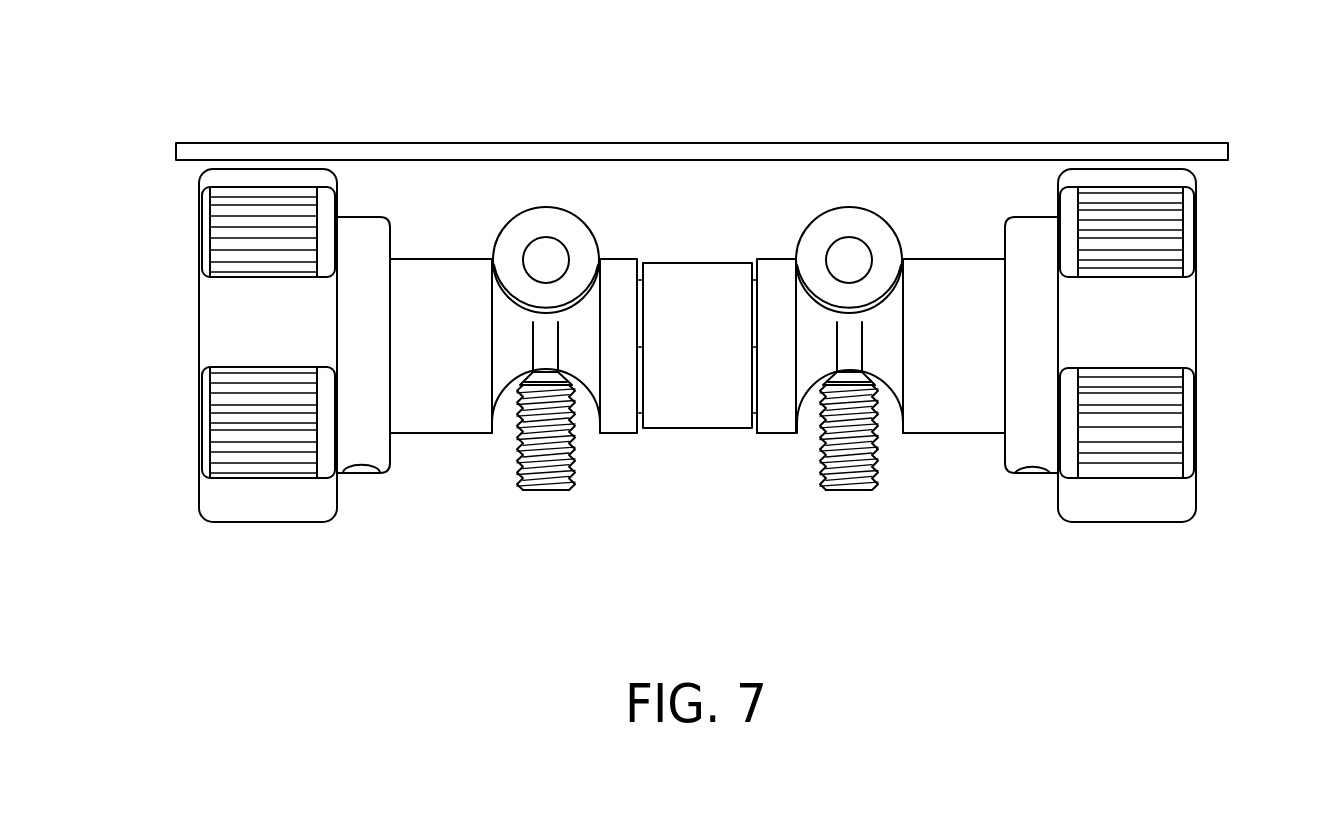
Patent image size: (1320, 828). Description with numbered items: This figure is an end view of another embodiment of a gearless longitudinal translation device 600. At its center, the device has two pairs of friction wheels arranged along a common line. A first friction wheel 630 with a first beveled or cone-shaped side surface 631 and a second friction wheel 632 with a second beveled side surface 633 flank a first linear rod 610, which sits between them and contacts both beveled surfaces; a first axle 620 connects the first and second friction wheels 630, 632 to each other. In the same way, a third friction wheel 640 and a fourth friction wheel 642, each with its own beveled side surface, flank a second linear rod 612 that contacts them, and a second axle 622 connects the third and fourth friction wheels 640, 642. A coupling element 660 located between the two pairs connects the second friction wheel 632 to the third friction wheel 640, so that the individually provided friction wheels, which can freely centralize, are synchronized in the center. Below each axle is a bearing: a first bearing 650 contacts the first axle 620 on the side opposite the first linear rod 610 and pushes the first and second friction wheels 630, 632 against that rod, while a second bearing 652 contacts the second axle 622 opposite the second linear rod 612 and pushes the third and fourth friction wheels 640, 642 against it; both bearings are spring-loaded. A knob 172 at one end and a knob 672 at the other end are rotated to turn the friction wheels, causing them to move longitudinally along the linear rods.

The gearless longitudinal translation device 600 is at (1205, 86).
The knob 172 is at (199, 335).
The knob 672 is at (1196, 331).
The first linear rod 610 is at (520, 212).
The second linear rod 612 is at (876, 210).
The first axle 620 is at (510, 390).
The second axle 622 is at (888, 390).
The first friction wheel 630 is at (450, 259).
The first beveled side surface 631 is at (497, 303).
The second friction wheel 632 is at (628, 259).
The second beveled side surface 633 is at (592, 303).
The third friction wheel 640 is at (772, 259).
The fourth friction wheel 642 is at (966, 259).
The first bearing 650 is at (546, 492).
The second bearing 652 is at (850, 492).
The coupling element 660 is at (698, 436).